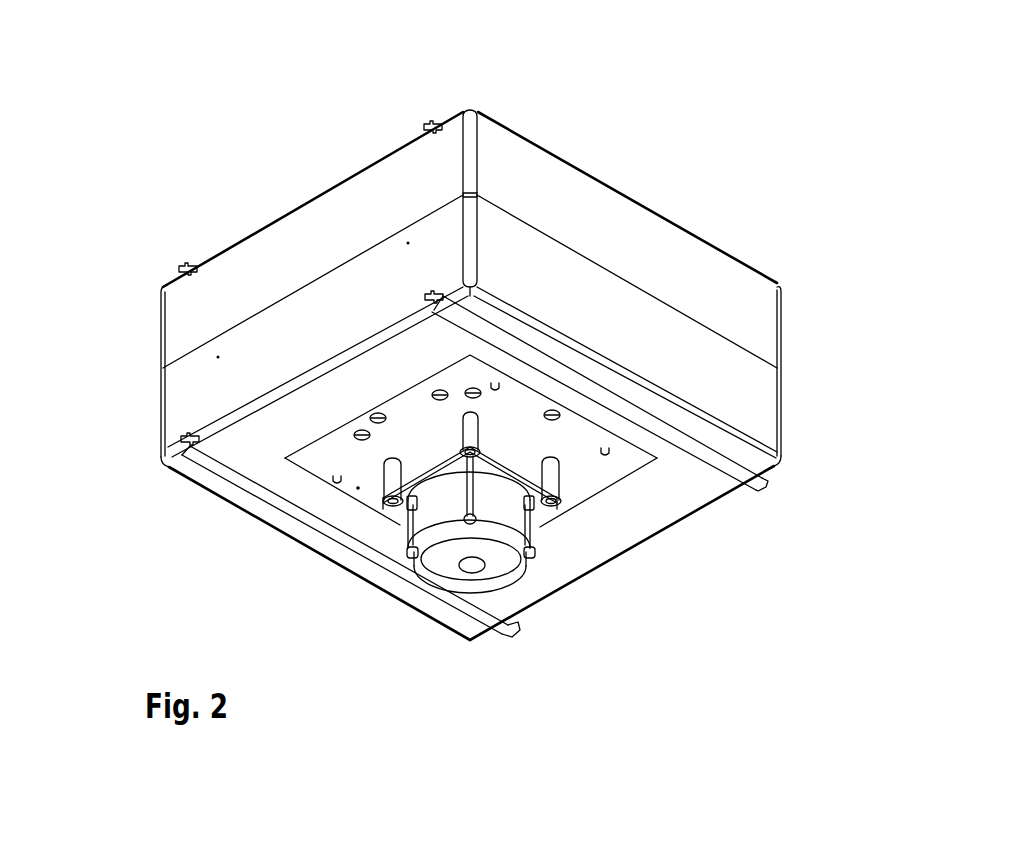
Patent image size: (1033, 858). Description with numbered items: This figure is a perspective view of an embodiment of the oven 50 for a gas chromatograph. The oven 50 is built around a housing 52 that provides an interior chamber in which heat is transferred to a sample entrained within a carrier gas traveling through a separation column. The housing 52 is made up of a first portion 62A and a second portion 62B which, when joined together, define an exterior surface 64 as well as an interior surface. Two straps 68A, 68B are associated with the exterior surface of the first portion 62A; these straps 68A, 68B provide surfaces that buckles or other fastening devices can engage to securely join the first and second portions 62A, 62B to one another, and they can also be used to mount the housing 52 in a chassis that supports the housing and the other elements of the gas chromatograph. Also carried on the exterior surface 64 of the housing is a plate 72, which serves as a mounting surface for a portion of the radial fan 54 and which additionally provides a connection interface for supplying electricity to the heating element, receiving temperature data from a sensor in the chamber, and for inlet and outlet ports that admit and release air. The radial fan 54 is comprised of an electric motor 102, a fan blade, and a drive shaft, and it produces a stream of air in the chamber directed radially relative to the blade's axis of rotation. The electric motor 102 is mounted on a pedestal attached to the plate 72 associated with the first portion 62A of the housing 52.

The oven 50 is at (543, 97).
The housing 52 is at (755, 248).
The radial fan 54 is at (547, 614).
The first portion 62A is at (159, 413).
The second portion 62B is at (257, 233).
The exterior surface 64 is at (334, 253).
The strap 68A is at (487, 615).
The strap 68B is at (733, 475).
The plate 72 is at (448, 444).
The electric motor 102 is at (385, 541).